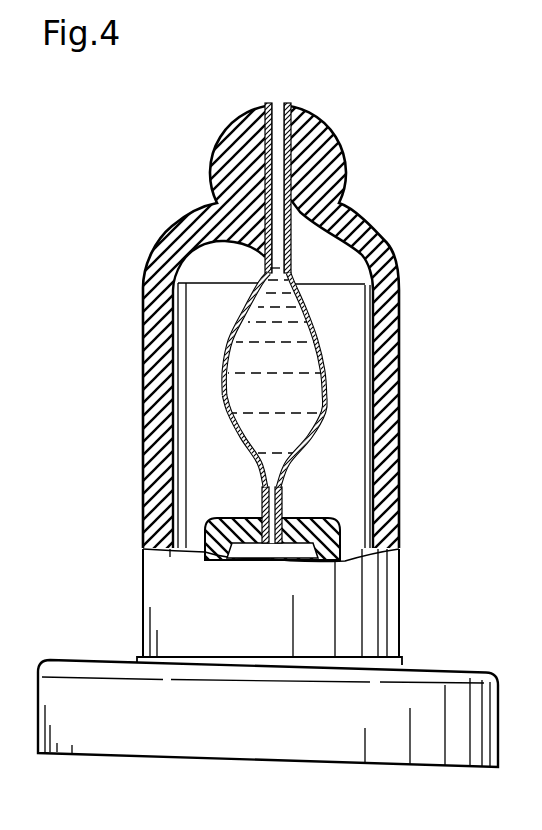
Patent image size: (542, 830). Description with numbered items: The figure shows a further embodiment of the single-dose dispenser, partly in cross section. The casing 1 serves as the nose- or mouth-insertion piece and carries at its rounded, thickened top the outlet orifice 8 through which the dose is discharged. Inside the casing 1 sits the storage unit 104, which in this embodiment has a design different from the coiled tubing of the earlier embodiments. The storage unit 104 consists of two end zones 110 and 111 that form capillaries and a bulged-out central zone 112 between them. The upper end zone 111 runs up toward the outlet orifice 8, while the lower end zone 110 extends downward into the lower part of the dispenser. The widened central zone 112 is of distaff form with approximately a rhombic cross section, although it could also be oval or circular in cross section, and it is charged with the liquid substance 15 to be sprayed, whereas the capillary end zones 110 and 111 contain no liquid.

The casing 1 is at (401, 487).
The outlet orifice 8 is at (278, 102).
The liquid substance 15 is at (282, 377).
The storage unit 104 is at (324, 344).
The end zone 110 is at (262, 488).
The end zone 111 is at (291, 233).
The bulged-out central zone 112 is at (230, 417).